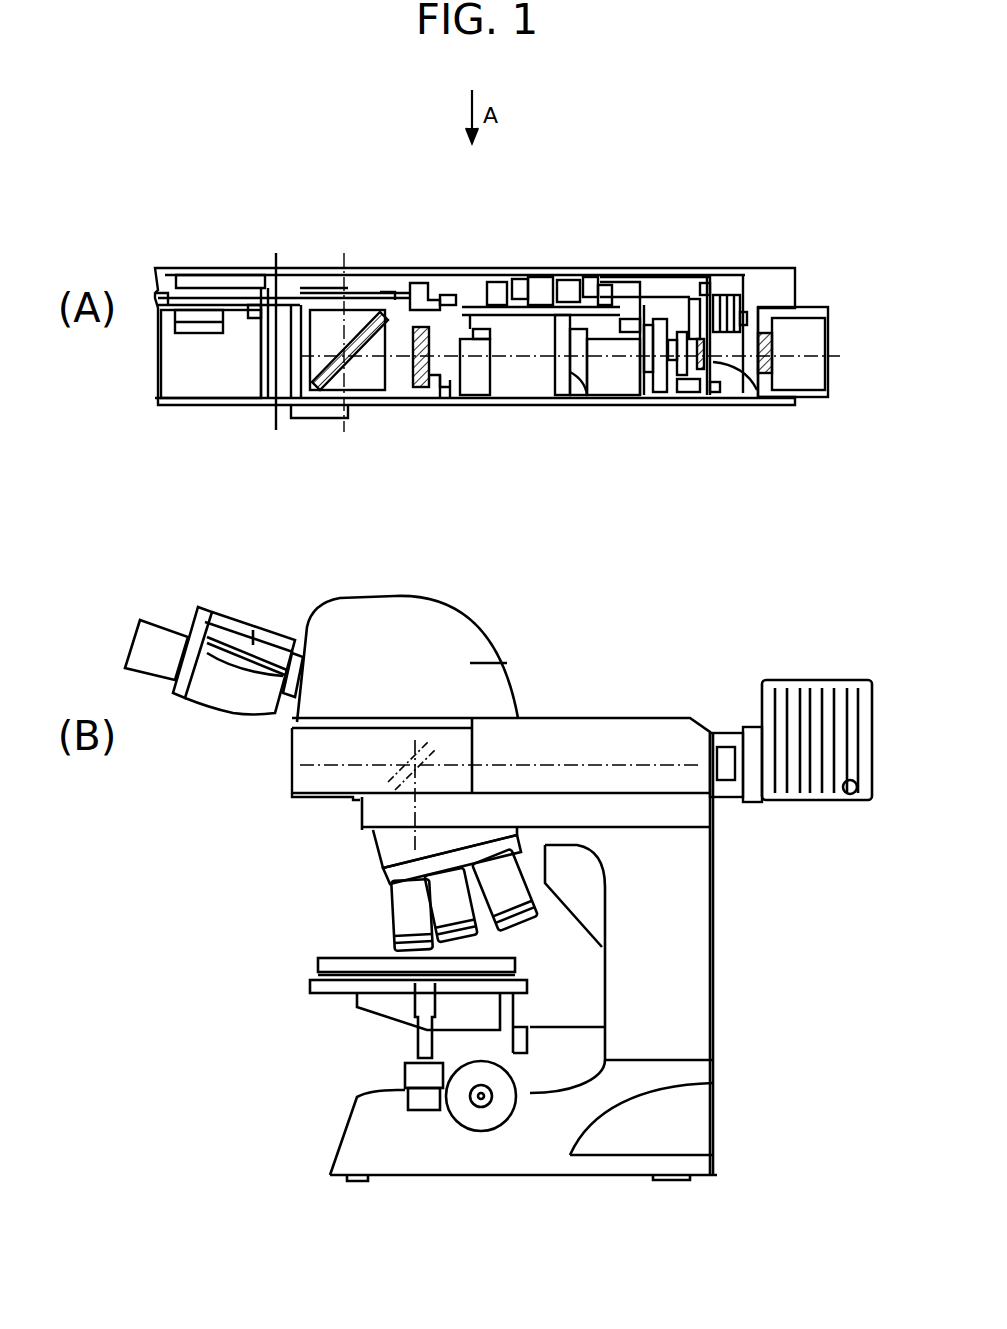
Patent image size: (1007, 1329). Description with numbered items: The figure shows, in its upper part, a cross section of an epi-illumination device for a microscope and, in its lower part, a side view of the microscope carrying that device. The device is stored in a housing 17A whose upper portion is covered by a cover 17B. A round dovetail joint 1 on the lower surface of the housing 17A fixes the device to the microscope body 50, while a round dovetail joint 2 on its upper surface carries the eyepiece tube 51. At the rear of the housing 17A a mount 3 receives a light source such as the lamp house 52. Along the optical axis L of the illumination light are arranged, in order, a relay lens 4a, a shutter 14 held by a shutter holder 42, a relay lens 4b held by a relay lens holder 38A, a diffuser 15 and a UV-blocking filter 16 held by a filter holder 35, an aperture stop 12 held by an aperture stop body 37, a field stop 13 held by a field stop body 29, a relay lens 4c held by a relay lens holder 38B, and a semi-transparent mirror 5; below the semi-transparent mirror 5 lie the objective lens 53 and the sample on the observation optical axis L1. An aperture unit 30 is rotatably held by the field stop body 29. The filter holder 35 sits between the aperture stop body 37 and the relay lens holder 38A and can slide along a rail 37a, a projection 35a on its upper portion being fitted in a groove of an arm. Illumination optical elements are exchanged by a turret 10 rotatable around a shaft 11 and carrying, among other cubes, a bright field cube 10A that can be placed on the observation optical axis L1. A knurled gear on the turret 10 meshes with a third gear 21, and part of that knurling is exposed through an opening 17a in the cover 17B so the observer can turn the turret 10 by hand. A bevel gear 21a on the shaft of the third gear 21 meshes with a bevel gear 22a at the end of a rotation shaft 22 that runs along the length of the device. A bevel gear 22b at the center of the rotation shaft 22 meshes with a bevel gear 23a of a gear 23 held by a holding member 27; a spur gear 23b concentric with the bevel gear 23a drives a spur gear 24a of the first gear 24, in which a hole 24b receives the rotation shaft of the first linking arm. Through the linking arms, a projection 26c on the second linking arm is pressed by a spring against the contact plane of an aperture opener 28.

The round dovetail joint 1 is at (387, 405).
The round dovetail joint 2 is at (375, 277).
The mount 3 is at (802, 307).
The relay lens 4a is at (787, 377).
The relay lens 4b is at (723, 365).
The relay lens 4c is at (423, 387).
The semi-transparent mirror 5 is at (330, 390).
The turret 10 is at (300, 300).
The bright field cube 10A is at (357, 393).
The shaft 11 is at (258, 365).
The aperture stop 12 is at (658, 345).
The field stop 13 is at (580, 395).
The shutter 14 is at (753, 275).
The diffuser 15 is at (680, 350).
The UV-blocking filter 16 is at (700, 369).
The housing 17A is at (200, 405).
The cover 17B is at (180, 268).
The opening 17a is at (155, 296).
The third gear 21 is at (417, 283).
The bevel gear 21a is at (385, 292).
The rotation shaft 22 is at (470, 307).
The bevel gear 22a is at (442, 295).
The bevel gear 22b is at (525, 315).
The guide 23 is at (567, 280).
The bevel gear 23a is at (603, 287).
The spur gear 23b is at (588, 277).
The first gear 24 is at (540, 277).
The spur gear 24a is at (495, 282).
The hole 24b is at (518, 279).
The projection 26c is at (645, 300).
The holding member 27 is at (703, 287).
The aperture opener 28 is at (644, 305).
The field stop body 29 is at (575, 377).
The aperture unit 30 is at (565, 395).
The filter holder 35 is at (677, 357).
The projection 35a is at (673, 347).
The aperture stop body 37 is at (650, 345).
The rail 37a is at (700, 340).
The relay lens holder 38A is at (673, 360).
The relay lens holder 38B is at (447, 393).
The shutter holder 42 is at (743, 363).
The microscope body 50 is at (373, 830).
The eyepiece tube 51 is at (470, 663).
The lamp house 52 is at (762, 700).
The objective lens 53 is at (402, 903).
The optical axis L is at (838, 356).
The observation optical axis L1 is at (345, 432).